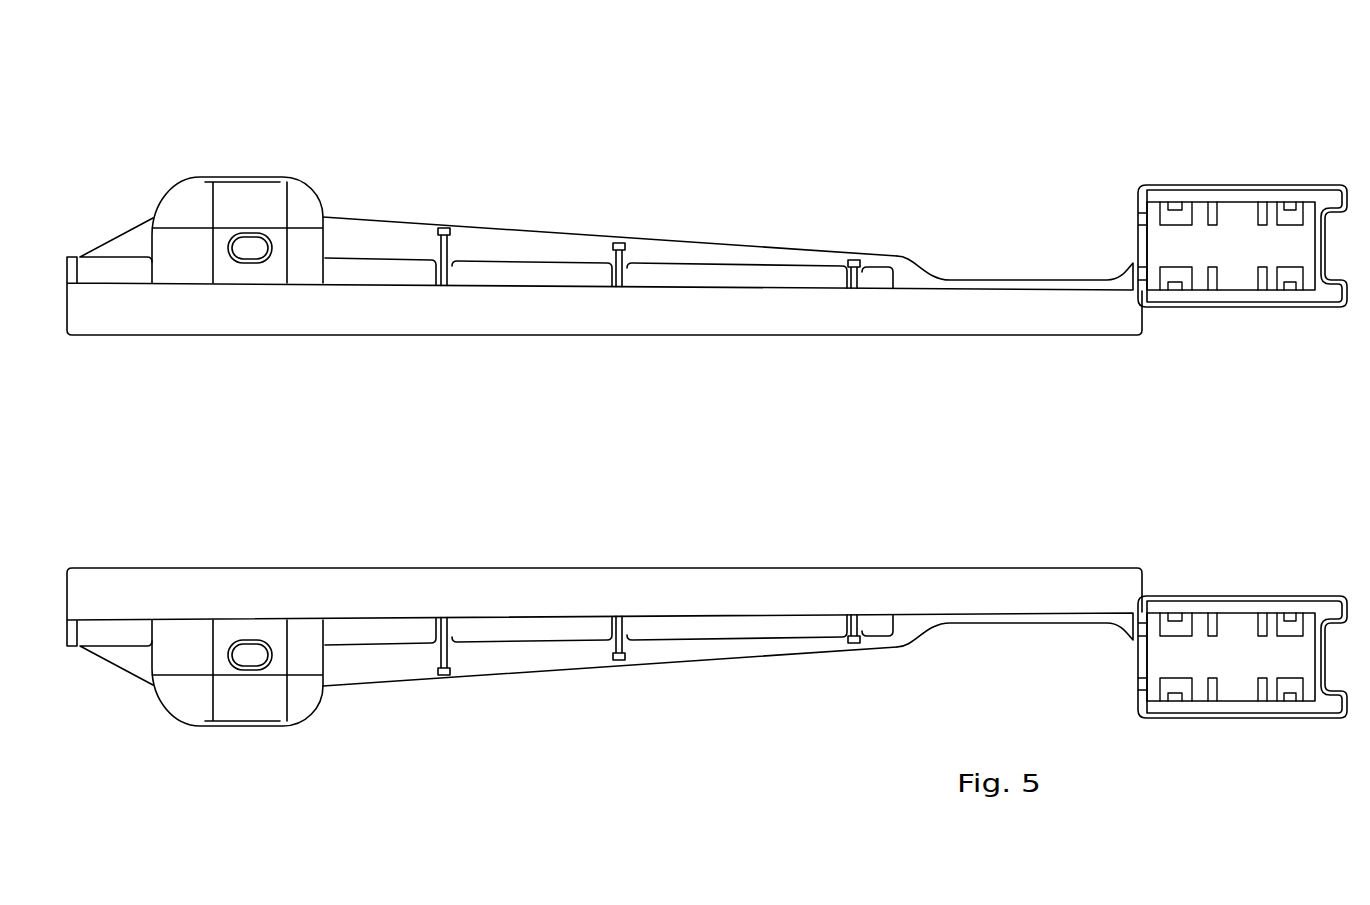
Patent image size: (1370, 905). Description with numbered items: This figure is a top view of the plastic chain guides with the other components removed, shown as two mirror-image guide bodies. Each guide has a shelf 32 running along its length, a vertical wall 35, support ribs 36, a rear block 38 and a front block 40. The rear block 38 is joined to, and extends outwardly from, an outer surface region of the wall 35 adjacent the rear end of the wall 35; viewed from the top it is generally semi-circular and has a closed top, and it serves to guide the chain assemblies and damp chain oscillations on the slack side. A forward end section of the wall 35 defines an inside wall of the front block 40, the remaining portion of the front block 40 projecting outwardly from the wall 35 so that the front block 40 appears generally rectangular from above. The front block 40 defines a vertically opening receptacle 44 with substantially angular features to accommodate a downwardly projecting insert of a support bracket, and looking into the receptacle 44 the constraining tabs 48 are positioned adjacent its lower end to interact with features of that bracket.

The shelf 32 is at (515, 313).
The wall 35 is at (368, 270).
The support ribs 36 is at (452, 245).
The rear block 38 is at (253, 190).
The front block 40 is at (1310, 185).
The receptacle 44 is at (1228, 233).
The constraining tabs 48 is at (1283, 278).